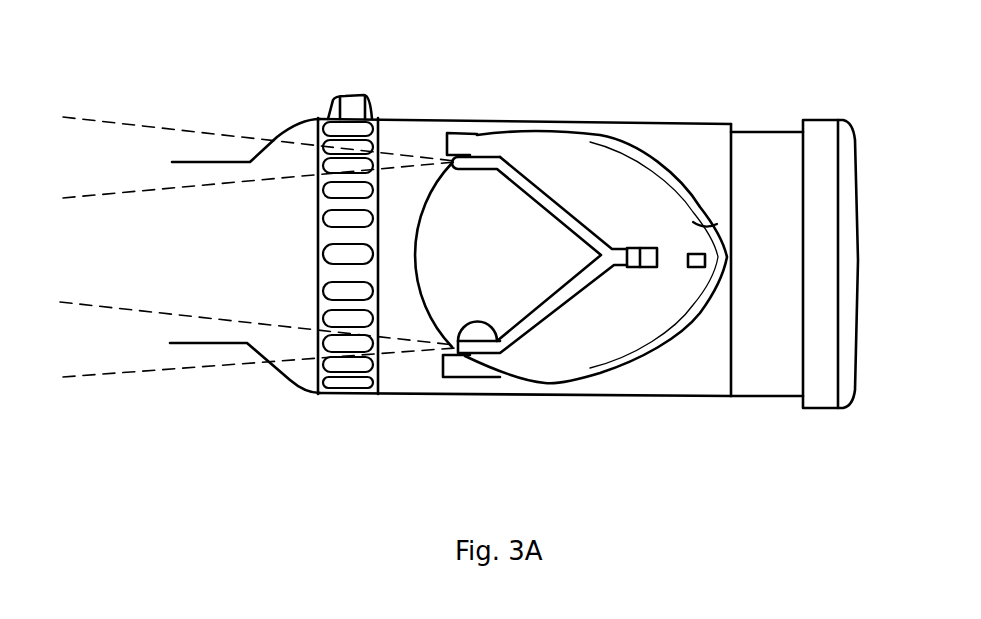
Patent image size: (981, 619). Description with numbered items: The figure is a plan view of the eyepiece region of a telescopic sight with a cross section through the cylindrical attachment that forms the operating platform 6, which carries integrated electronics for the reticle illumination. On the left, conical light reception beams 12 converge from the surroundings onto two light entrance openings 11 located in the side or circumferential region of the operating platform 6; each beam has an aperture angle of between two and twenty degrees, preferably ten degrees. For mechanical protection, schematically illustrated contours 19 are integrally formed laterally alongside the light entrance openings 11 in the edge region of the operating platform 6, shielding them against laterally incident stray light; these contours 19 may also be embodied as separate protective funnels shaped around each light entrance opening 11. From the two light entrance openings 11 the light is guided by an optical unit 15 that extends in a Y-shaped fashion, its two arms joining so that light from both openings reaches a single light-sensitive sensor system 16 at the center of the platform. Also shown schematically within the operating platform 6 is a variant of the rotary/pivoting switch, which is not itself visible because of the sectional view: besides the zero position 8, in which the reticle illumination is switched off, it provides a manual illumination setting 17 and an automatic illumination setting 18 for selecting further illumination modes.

The light reception beams 12 is at (117, 150).
The light entrance openings 11 is at (455, 163).
The contours 19 is at (460, 141).
The operating platform 6 is at (593, 142).
The optical unit 15 is at (577, 218).
The light-sensitive sensor system 16 is at (650, 257).
The zero position 8 is at (705, 253).
The automatic illumination setting 18 is at (722, 218).
The manual illumination setting 17 is at (703, 295).